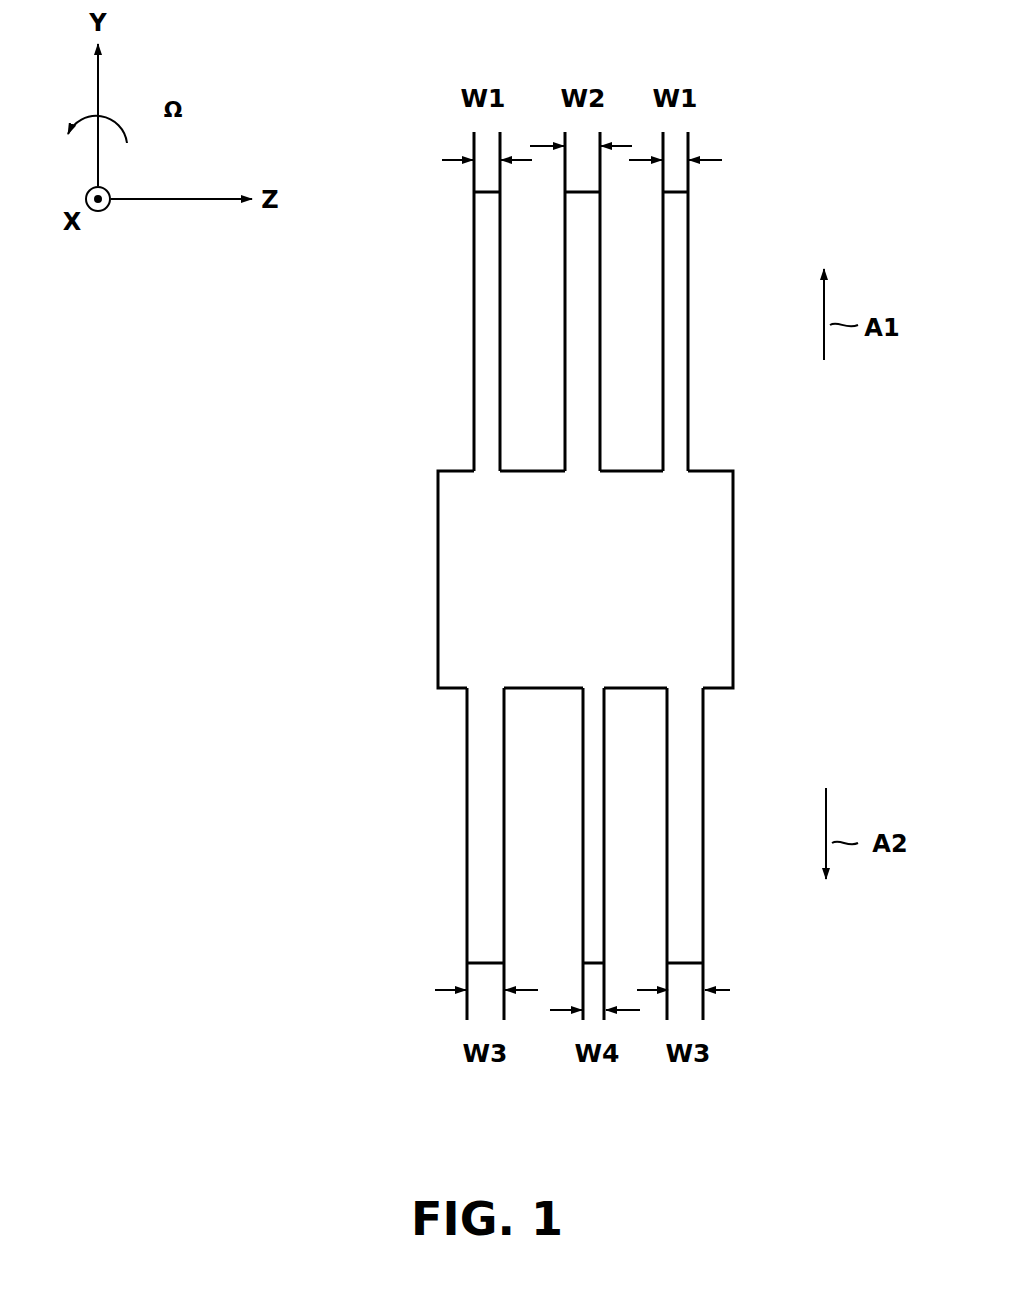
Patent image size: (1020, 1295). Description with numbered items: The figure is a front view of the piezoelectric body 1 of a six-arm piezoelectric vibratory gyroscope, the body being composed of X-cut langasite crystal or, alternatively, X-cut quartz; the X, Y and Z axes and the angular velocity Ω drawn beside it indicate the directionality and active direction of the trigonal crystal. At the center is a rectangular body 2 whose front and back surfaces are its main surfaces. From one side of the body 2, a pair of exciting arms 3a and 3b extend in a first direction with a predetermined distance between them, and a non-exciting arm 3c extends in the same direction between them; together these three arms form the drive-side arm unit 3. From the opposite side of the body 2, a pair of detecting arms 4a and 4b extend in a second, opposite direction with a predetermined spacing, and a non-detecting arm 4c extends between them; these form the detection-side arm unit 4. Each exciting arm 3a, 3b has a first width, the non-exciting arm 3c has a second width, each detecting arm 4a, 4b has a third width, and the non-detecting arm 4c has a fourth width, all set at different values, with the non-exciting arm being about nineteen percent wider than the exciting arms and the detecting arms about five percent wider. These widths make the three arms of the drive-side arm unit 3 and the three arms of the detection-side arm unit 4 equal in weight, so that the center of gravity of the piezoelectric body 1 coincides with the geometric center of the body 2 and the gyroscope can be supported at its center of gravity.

The piezoelectric body 1 is at (372, 575).
The body 2 is at (703, 557).
The drive-side arm unit 3 is at (432, 260).
The exciting arm 3a is at (483, 330).
The exciting arm 3b is at (683, 328).
The non-exciting arm 3c is at (575, 330).
The detection-side arm unit 4 is at (416, 884).
The detecting arm 4a is at (472, 808).
The detecting arm 4b is at (697, 807).
The non-detecting arm 4c is at (590, 808).